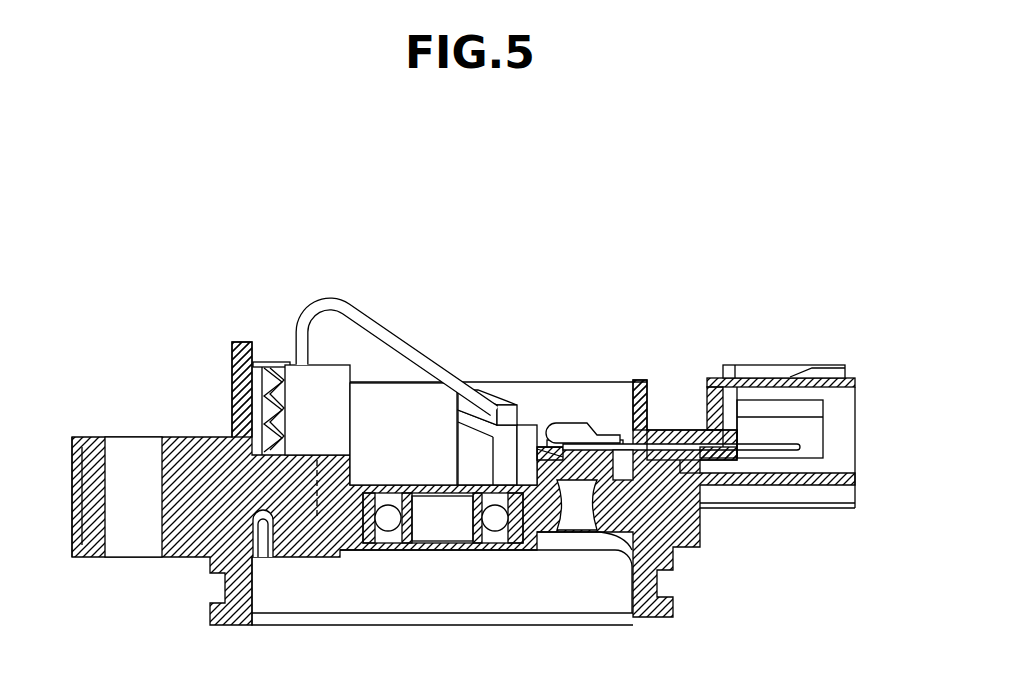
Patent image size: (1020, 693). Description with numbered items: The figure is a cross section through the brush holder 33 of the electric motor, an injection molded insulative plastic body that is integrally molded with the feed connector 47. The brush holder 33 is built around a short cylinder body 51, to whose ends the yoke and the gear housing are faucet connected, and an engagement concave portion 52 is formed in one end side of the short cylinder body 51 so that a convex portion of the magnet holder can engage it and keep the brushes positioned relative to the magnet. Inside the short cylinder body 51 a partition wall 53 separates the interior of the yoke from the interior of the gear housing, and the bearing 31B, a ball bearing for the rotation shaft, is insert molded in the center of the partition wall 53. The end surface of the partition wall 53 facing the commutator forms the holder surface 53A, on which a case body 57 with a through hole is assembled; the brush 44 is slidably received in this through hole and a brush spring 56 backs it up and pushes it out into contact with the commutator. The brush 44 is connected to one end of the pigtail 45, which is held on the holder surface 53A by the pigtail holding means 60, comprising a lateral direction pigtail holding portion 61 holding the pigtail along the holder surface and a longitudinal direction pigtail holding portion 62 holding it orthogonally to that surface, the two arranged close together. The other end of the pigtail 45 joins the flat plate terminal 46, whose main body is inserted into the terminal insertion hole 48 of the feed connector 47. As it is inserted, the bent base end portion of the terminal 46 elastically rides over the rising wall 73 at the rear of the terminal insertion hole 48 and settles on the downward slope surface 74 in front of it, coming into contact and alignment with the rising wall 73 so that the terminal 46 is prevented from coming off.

The brush holder 33 is at (117, 420).
The short cylinder body 51 is at (232, 400).
The brush spring 56 is at (232, 357).
The case body 57 is at (292, 358).
The brush 44 is at (330, 393).
The holder surface 53A is at (343, 443).
The pigtail holding means 60 is at (485, 378).
The longitudinal direction pigtail holding portion 62 is at (470, 403).
The pigtail 45 is at (350, 303).
The lateral direction pigtail holding portion 61 is at (557, 425).
The rising wall 73 is at (543, 447).
The terminal 46 is at (800, 437).
The downward slope surface 74 is at (567, 462).
The engagement concave portion 52 is at (638, 380).
The terminal insertion hole 48 is at (682, 430).
The feed connector 47 is at (830, 365).
The partition wall 53 is at (348, 540).
The bearing 31B is at (500, 531).